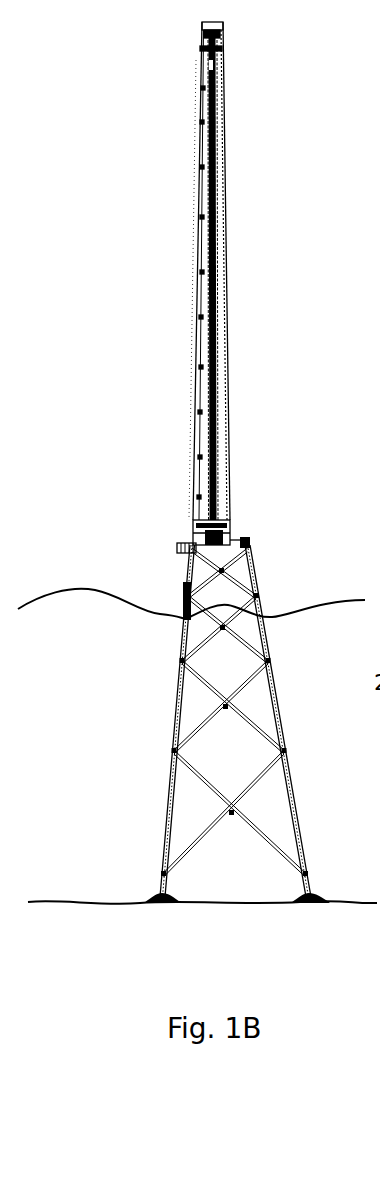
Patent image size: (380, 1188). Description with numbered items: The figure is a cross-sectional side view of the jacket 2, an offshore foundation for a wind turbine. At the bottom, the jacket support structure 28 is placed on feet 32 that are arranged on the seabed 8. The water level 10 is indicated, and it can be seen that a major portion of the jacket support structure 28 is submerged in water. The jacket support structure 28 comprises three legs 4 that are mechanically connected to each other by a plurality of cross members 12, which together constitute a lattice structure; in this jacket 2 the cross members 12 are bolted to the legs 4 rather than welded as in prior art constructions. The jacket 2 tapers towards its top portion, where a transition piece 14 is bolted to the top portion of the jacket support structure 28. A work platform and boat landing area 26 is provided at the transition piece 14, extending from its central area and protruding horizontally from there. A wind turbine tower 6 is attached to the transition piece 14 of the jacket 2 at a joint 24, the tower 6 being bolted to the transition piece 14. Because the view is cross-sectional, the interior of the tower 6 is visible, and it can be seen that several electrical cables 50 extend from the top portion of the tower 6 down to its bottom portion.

The jacket 2 is at (108, 411).
The wind turbine tower 6 is at (197, 258).
The electrical cables 50 is at (225, 255).
The joint 24 is at (192, 520).
The transition piece 14 is at (237, 535).
The work platform and boat landing area 26 is at (177, 548).
The water level 10 is at (313, 600).
The jacket support structure 28 is at (128, 733).
The legs 4 is at (182, 681).
The cross members 12 is at (252, 720).
The seabed 8 is at (62, 901).
The feet 32 is at (323, 895).